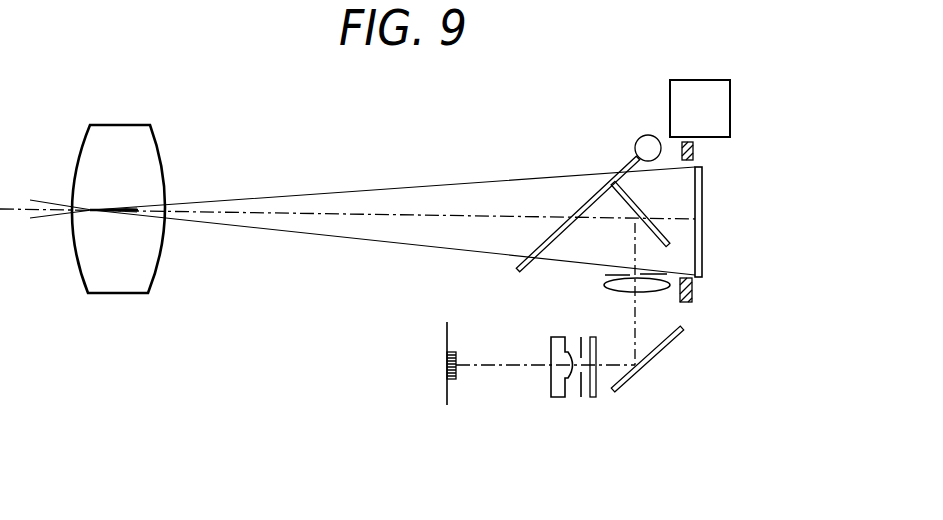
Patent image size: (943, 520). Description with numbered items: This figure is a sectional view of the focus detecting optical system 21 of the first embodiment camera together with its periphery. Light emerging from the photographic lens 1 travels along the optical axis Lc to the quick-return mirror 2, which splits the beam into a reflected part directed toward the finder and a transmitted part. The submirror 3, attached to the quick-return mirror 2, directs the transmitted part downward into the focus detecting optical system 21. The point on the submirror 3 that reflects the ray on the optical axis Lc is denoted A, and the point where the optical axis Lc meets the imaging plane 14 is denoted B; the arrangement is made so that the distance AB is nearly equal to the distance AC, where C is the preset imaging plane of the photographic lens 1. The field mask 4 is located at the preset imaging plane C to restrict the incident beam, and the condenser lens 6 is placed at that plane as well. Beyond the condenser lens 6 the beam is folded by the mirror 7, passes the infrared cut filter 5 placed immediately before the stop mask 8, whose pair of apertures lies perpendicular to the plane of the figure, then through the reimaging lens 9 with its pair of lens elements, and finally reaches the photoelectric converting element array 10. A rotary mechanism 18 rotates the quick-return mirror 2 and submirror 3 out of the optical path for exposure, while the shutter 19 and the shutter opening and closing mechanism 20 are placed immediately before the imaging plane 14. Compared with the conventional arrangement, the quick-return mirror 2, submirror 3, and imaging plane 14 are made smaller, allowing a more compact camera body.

The photographic lens 1 is at (128, 125).
The quick-return mirror 2 is at (553, 233).
The submirror 3 is at (615, 199).
The field mask 4 is at (605, 276).
The infrared cut filter 5 is at (597, 390).
The condenser lens 6 is at (660, 292).
The mirror 7 is at (668, 347).
The stop mask 8 is at (579, 398).
The reimaging lens 9 is at (557, 398).
The photoelectric converting element array 10 is at (448, 392).
The imaging plane 14 is at (703, 250).
The rotary mechanism 18 is at (647, 135).
The shutter 19 is at (697, 148).
The shutter opening and closing mechanism 20 is at (707, 100).
The focus detecting optical system 21 is at (652, 387).
The point A is at (638, 210).
The point B is at (692, 212).
The preset imaging plane C is at (635, 275).
The optical axis Lc is at (393, 215).